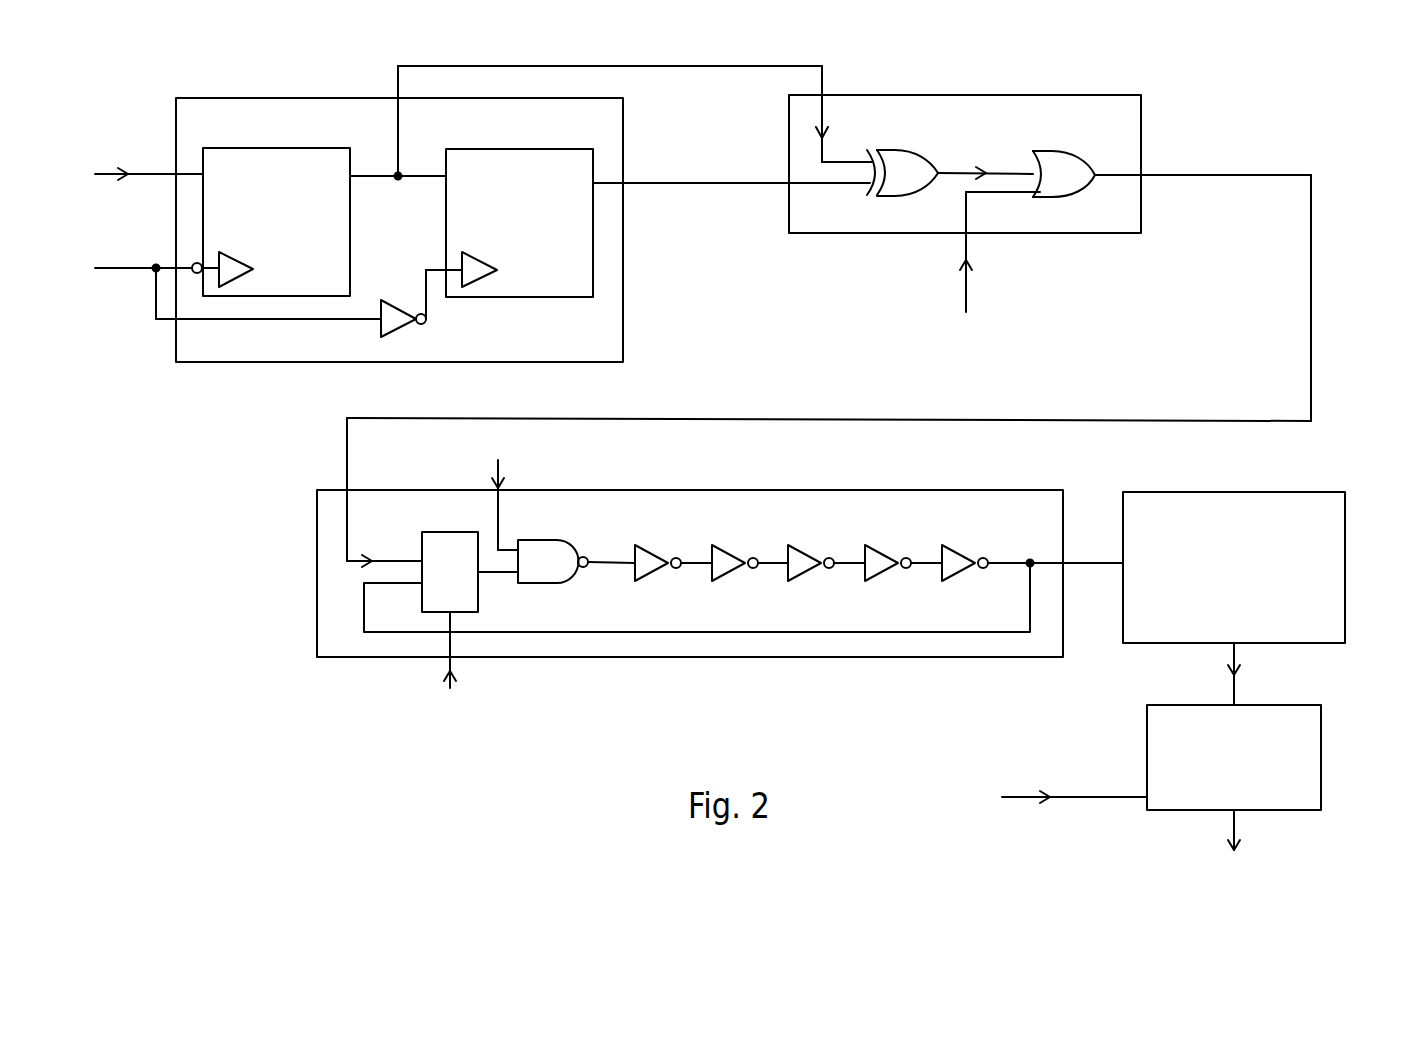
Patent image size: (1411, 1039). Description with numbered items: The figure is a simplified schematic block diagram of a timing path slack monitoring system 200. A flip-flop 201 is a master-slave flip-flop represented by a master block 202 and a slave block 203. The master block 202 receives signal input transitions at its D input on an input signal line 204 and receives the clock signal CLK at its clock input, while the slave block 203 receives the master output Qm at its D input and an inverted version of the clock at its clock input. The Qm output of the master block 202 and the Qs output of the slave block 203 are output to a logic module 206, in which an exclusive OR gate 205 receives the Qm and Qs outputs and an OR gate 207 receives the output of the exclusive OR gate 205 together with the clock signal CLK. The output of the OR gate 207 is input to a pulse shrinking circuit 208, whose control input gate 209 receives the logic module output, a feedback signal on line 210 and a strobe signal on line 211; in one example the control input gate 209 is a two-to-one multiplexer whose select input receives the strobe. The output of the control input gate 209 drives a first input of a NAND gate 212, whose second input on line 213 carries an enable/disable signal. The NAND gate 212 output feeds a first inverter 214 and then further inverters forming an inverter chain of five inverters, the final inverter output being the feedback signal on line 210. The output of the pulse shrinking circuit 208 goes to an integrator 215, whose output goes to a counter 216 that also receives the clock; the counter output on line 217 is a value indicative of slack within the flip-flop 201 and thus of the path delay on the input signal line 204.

The timing path slack monitoring system 200 is at (382, 719).
The flip-flop 201 is at (253, 118).
The master block 202 is at (345, 252).
The slave block 203 is at (500, 160).
The input signal line 204 is at (160, 173).
The exclusive OR gate 205 is at (897, 168).
The logic module 206 is at (845, 218).
The OR gate 207 is at (1050, 168).
The pulse shrinking circuit 208 is at (775, 505).
The control input gate 209 is at (450, 543).
The feedback signal line 210 is at (985, 636).
The strobe signal line 211 is at (450, 662).
The NAND gate 212 is at (547, 548).
The enable/disable signal line 213 is at (499, 472).
The first inverter 214 is at (650, 550).
The integrator 215 is at (1263, 505).
The counter 216 is at (1298, 718).
The counter output line 217 is at (1240, 827).